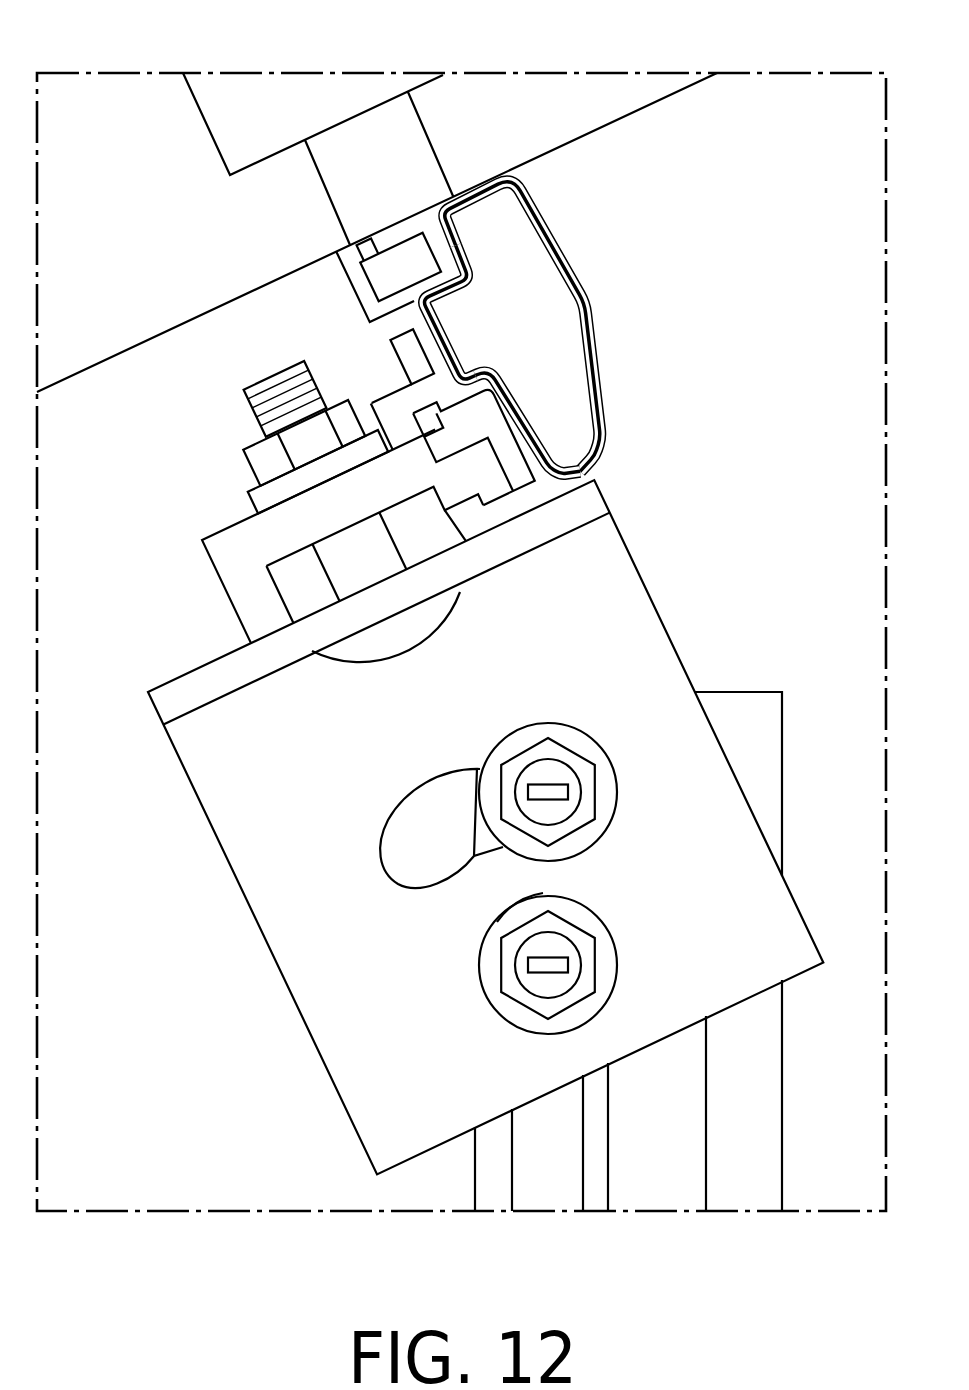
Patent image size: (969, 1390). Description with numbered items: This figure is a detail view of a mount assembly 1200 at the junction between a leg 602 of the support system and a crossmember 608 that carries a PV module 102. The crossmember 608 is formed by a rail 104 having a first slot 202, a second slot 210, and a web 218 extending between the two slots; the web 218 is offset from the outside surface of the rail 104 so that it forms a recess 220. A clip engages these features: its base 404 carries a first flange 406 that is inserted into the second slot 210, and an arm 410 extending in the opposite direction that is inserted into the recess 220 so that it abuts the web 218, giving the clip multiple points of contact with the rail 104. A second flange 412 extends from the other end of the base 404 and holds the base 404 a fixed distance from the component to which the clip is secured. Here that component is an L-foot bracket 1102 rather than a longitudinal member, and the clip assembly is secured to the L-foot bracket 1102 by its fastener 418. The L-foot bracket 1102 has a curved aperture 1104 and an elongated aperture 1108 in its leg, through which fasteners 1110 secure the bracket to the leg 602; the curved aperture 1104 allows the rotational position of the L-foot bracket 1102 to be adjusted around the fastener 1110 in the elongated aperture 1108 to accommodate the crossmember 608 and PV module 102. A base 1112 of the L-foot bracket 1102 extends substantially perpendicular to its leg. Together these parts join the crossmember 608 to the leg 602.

The PV module 102 is at (190, 203).
The rail 104 is at (572, 332).
The first slot 202 is at (345, 258).
The second slot 210 is at (523, 458).
The web 218 is at (433, 334).
The recess 220 is at (362, 323).
The base 404 is at (257, 518).
The first flange 406 is at (505, 490).
The arm 410 is at (415, 367).
The second flange 412 is at (252, 587).
The fastener 418 is at (275, 455).
The leg 602 is at (497, 1170).
The crossmember 608 is at (547, 213).
The L-foot bracket 1102 is at (743, 777).
The curved aperture 1104 is at (380, 862).
The elongated aperture 1108 is at (513, 893).
The fasteners 1110 is at (558, 777).
The base 1112 is at (238, 673).
The mount assembly 1200 is at (784, 42).